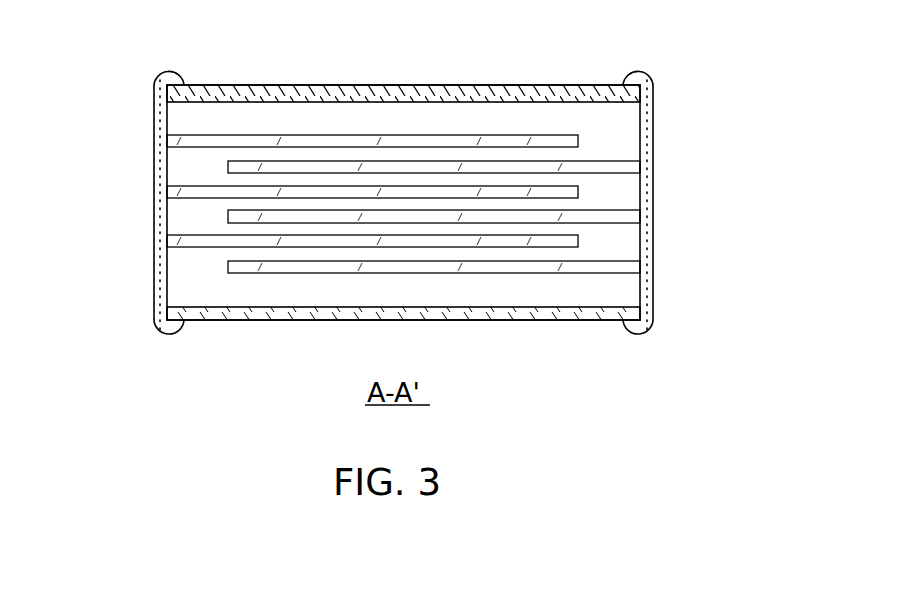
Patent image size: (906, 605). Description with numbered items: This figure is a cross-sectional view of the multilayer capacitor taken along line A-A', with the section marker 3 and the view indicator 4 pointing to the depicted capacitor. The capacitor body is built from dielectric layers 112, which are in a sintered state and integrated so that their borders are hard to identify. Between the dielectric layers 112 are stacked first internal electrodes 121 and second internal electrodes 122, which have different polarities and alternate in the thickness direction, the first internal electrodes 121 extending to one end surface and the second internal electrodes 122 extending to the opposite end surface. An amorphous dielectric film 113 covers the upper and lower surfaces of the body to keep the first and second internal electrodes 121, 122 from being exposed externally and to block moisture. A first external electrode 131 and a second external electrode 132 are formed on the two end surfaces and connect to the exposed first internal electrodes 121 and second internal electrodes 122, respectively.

The ceramic body 3 is at (139, 258).
The multilayer ceramic capacitor 4 is at (664, 143).
The dielectric layers 112 is at (557, 204).
The amorphous dielectric film 113 is at (365, 96).
The first internal electrodes 121 is at (205, 188).
The second internal electrodes 122 is at (617, 222).
The first external electrode 131 is at (162, 107).
The second external electrode 132 is at (650, 287).